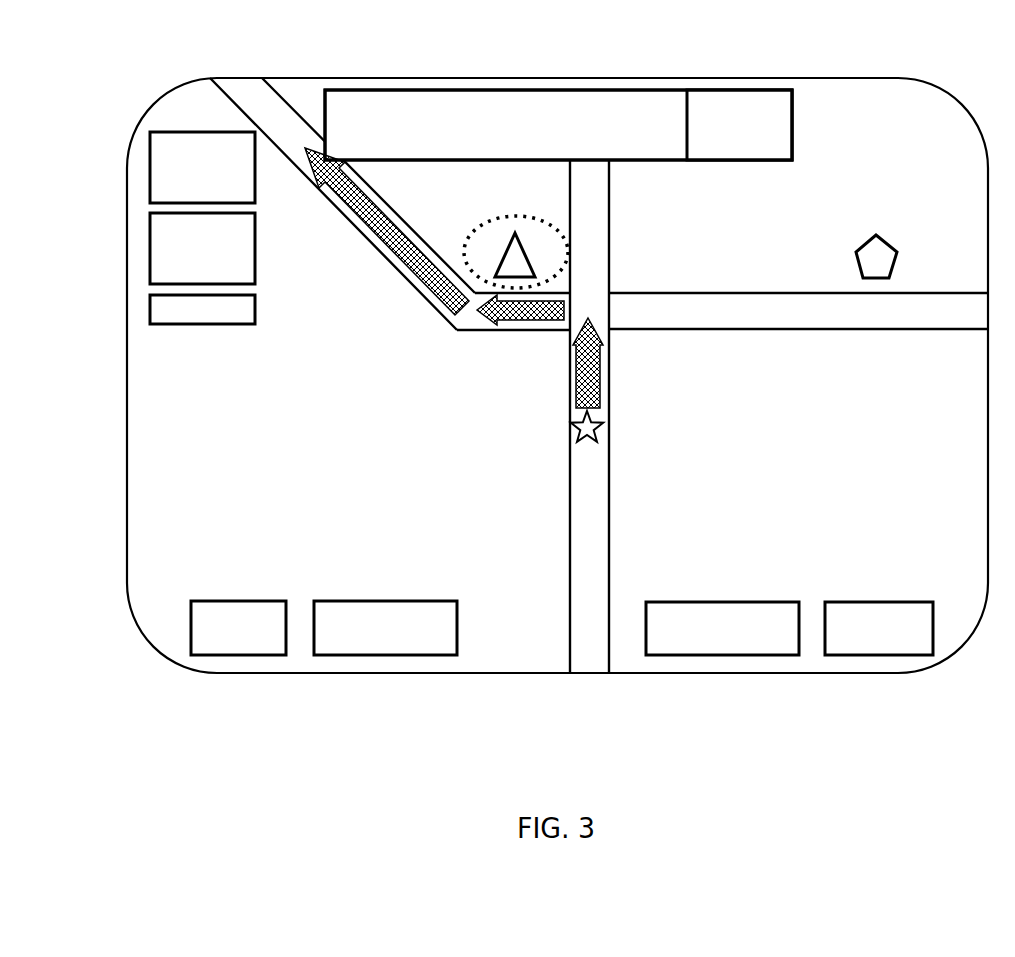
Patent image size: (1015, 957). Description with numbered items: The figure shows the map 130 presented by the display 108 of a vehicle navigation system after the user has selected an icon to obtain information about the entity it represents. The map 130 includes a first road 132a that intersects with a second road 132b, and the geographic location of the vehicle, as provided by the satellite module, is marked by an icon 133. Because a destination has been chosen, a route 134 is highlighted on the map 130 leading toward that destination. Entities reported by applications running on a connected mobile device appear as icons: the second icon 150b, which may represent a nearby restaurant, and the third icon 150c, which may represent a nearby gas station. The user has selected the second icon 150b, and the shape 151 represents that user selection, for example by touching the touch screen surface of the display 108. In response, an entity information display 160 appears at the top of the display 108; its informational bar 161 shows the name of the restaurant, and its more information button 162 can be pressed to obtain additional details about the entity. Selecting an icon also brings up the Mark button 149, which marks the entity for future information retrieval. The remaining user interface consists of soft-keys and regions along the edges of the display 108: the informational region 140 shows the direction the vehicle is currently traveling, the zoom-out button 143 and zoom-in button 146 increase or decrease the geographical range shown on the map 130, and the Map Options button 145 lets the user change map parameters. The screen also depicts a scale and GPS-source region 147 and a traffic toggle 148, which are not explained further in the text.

The display 108 is at (183, 85).
The map 130 is at (923, 135).
The first road 132a is at (608, 480).
The second road 132b is at (392, 208).
The icon 133 is at (602, 430).
The route 134 is at (412, 268).
The informational region 140 is at (148, 177).
The zoom-out button 143 is at (237, 601).
The Map Options button 145 is at (720, 602).
The zoom-in button 146 is at (877, 602).
The scale and GPS indicator 147 is at (148, 250).
The traffic button 148 is at (148, 310).
The Mark button 149 is at (387, 601).
The second icon 150b is at (495, 262).
The third icon 150c is at (888, 243).
The shape 151 is at (532, 212).
The entity information display 160 is at (667, 172).
The informational bar 161 is at (643, 90).
The more information button 162 is at (792, 122).